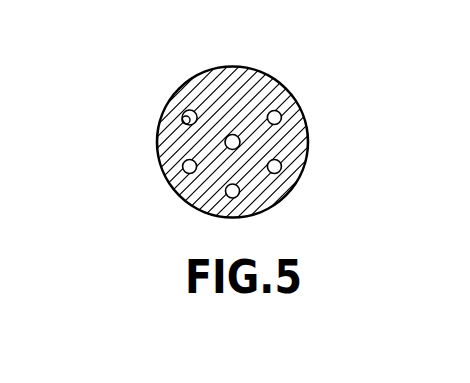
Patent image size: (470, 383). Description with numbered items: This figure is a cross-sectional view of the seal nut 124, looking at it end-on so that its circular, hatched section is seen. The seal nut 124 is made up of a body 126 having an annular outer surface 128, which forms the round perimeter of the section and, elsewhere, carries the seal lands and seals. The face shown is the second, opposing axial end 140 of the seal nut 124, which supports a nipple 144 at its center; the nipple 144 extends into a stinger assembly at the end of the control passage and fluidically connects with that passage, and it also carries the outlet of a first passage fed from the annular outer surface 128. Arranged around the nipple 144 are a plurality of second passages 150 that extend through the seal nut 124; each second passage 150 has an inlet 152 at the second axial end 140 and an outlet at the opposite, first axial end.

The seal nut 124 is at (298, 195).
The body 126 is at (175, 197).
The annular outer surface 128 is at (296, 98).
The second axial end 140 is at (238, 92).
The nipple 144 is at (243, 142).
The second passages 150 is at (189, 111).
The inlet 152 is at (185, 121).